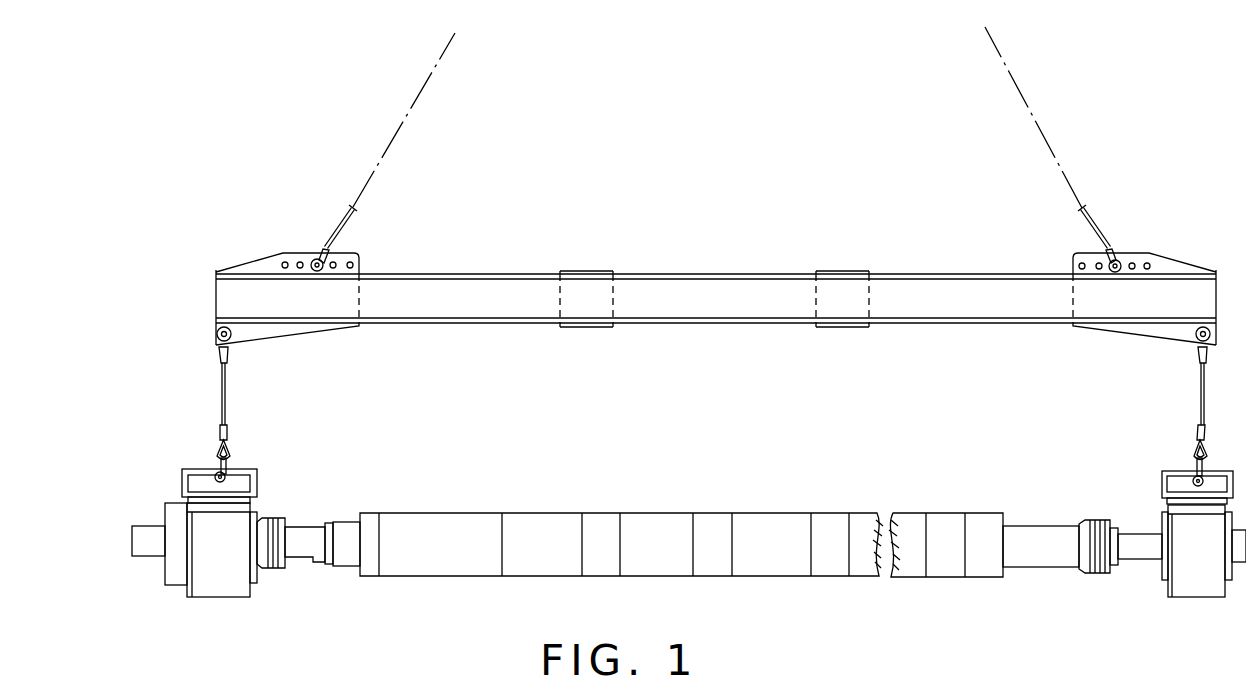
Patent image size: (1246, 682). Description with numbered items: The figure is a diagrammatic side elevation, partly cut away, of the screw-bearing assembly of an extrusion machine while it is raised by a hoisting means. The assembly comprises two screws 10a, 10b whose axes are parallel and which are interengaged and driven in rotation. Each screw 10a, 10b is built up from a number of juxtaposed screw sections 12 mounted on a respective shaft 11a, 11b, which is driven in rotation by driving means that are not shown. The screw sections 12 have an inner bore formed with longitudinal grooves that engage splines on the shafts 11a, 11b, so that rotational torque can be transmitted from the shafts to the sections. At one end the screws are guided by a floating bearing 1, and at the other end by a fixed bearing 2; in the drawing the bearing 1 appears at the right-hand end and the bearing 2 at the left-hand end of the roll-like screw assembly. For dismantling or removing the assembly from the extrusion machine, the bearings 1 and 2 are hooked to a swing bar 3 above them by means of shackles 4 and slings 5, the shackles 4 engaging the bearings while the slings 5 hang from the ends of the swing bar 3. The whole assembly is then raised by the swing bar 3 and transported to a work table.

The floating bearing 1 is at (1185, 580).
The fixed bearing 2 is at (200, 587).
The swing bar 3 is at (549, 299).
The shackle 4 is at (214, 466).
The sling 5 is at (218, 404).
The screw 10a is at (347, 578).
The screw 10b is at (913, 580).
The shaft 11a is at (314, 532).
The shaft 11b is at (1131, 548).
The screw section 12 is at (482, 528).